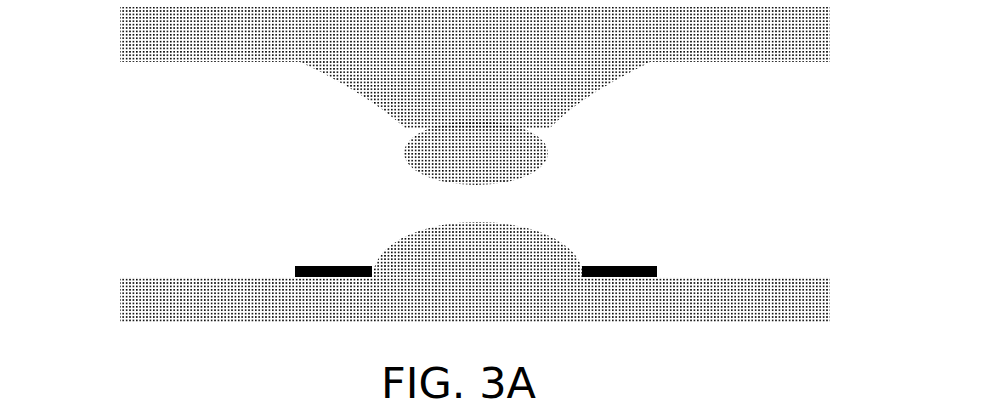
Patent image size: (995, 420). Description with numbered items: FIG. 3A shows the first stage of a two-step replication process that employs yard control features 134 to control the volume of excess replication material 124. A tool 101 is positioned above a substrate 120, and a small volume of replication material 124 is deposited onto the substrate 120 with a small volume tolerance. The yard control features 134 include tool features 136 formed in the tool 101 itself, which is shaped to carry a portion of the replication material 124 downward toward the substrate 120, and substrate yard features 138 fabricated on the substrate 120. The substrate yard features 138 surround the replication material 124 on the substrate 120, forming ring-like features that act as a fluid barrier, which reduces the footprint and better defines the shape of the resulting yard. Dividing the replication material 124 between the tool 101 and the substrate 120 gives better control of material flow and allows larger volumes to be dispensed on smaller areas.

The tool 101 is at (218, 38).
The substrate 120 is at (168, 277).
The replication material 124 is at (475, 240).
The yard control features 134 is at (380, 168).
The tool features 136 is at (512, 118).
The substrate yard features 138 is at (615, 268).